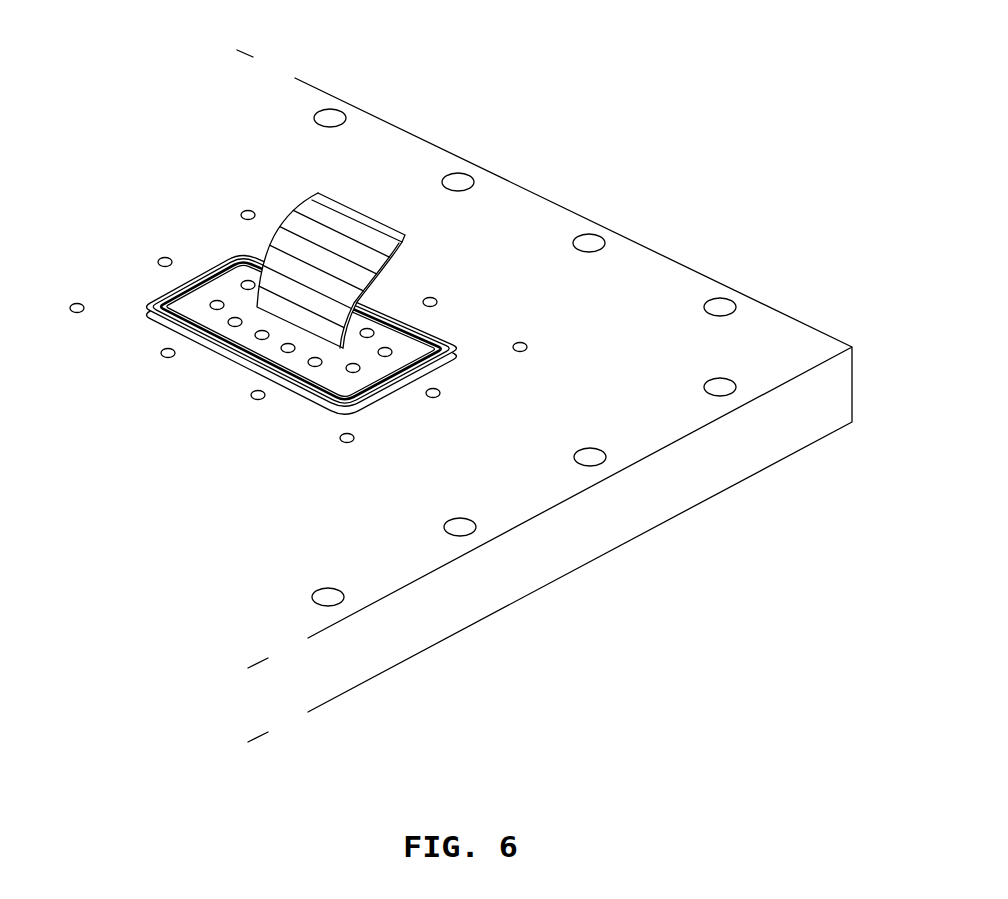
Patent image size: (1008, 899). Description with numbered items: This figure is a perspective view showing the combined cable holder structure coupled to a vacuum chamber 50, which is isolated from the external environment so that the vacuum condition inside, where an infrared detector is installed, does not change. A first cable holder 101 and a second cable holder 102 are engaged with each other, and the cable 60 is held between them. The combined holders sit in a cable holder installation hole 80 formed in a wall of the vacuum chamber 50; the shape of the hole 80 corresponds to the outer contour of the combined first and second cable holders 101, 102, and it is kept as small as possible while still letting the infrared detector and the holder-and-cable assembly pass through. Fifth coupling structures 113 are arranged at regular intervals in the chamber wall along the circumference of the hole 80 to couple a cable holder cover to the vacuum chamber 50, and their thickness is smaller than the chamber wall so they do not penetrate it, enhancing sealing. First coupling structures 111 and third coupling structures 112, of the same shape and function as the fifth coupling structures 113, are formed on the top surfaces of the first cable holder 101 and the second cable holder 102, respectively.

The vacuum chamber 50 is at (477, 468).
The cable 60 is at (367, 212).
The cable holder installation hole 80 is at (775, 341).
The first cable holder 101 is at (357, 389).
The second cable holder 102 is at (418, 357).
The first coupling structures 111 is at (288, 352).
The third coupling structures 112 is at (365, 337).
The fifth coupling structures 113 is at (78, 303).